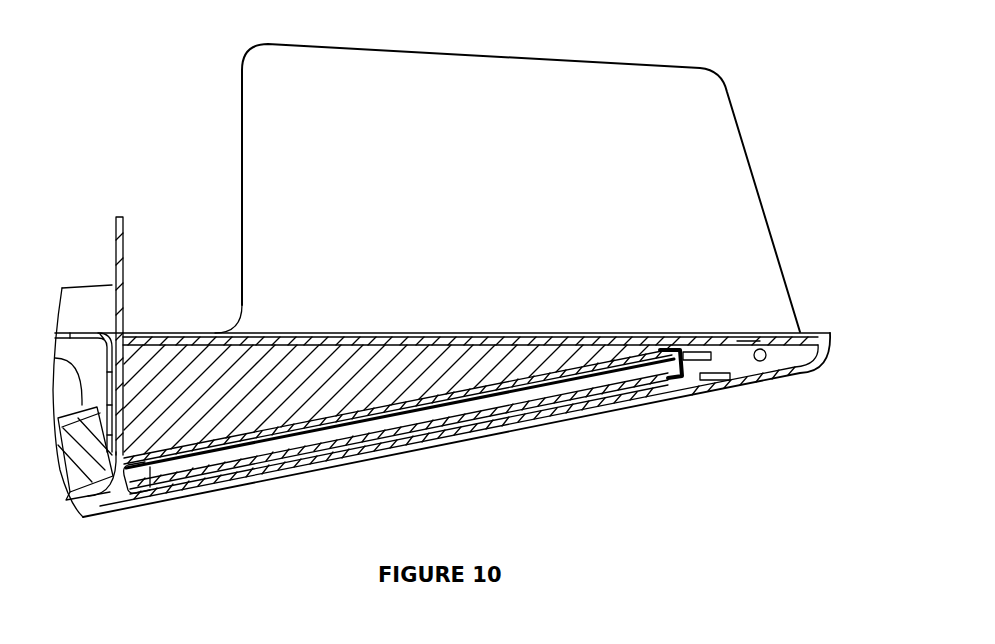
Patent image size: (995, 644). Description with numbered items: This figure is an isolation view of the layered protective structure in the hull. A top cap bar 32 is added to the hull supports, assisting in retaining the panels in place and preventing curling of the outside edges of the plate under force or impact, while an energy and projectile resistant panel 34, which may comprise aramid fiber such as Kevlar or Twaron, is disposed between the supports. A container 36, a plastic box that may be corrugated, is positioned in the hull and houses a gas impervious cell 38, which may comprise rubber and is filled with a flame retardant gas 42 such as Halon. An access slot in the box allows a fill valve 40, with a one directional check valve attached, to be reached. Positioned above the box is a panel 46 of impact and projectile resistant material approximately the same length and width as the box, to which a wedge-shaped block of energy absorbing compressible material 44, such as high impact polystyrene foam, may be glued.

The top cap bar 32 is at (803, 332).
The panel 34 is at (744, 343).
The container 36 is at (123, 470).
The cell 38 is at (682, 366).
The fill valve 40 is at (688, 365).
The flame retardant gas 42 is at (280, 450).
The block of energy absorbing compressible material 44 is at (155, 358).
The panel 46 is at (632, 345).